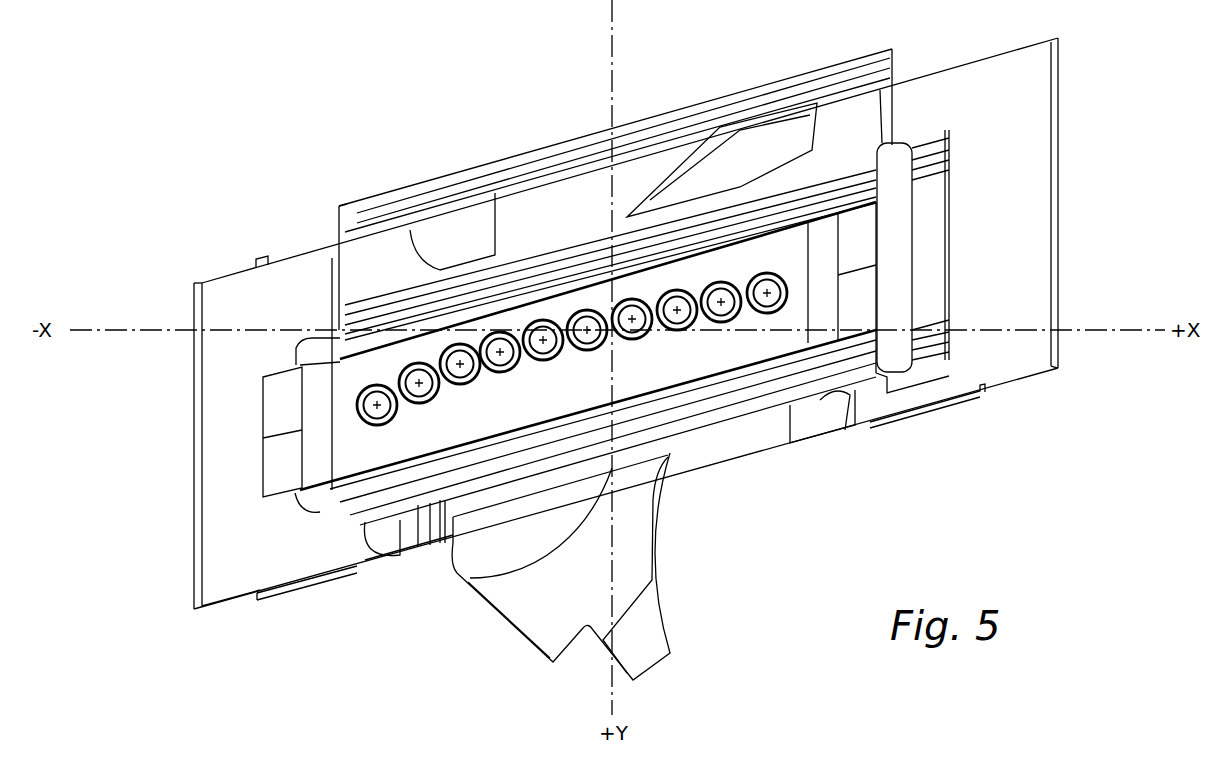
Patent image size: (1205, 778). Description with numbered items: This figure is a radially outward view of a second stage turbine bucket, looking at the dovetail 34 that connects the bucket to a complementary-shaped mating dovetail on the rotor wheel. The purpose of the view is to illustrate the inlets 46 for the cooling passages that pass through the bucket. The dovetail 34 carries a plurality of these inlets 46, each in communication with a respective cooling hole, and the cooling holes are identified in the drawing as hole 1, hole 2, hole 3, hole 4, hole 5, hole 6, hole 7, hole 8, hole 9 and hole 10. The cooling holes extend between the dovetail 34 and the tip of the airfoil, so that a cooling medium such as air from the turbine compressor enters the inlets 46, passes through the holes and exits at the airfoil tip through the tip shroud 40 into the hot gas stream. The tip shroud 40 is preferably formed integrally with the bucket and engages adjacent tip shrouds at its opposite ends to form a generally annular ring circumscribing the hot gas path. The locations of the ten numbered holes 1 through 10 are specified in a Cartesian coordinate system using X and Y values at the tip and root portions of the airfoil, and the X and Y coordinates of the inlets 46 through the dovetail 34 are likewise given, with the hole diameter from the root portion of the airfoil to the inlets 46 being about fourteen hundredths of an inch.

The cooling hole 1 is at (377, 405).
The cooling hole 2 is at (419, 383).
The cooling hole 3 is at (460, 364).
The cooling hole 4 is at (500, 352).
The cooling hole 5 is at (543, 340).
The cooling hole 6 is at (587, 330).
The cooling hole 7 is at (632, 319).
The cooling hole 8 is at (677, 310).
The cooling hole 9 is at (721, 302).
The cooling hole 10 is at (767, 293).
The dovetail 34 is at (300, 542).
The tip shroud 40 is at (680, 585).
The inlets 46 is at (640, 328).